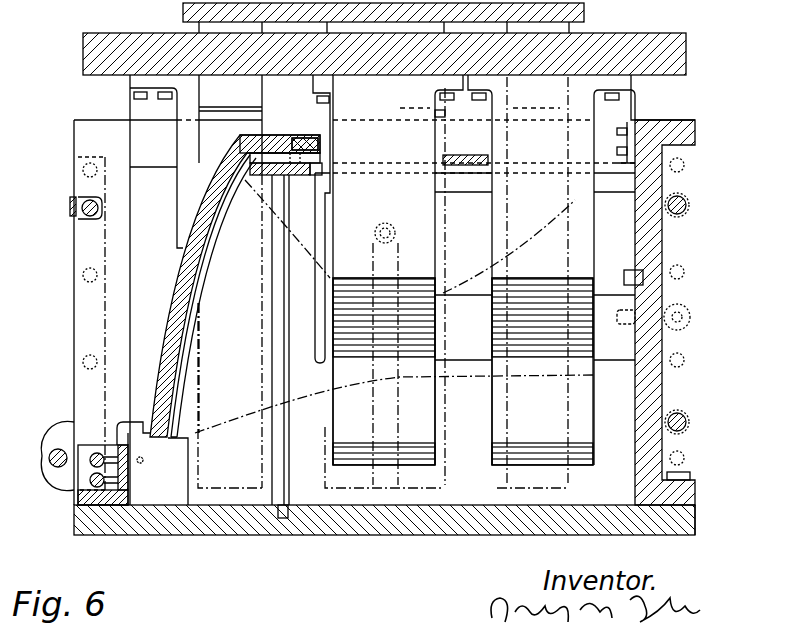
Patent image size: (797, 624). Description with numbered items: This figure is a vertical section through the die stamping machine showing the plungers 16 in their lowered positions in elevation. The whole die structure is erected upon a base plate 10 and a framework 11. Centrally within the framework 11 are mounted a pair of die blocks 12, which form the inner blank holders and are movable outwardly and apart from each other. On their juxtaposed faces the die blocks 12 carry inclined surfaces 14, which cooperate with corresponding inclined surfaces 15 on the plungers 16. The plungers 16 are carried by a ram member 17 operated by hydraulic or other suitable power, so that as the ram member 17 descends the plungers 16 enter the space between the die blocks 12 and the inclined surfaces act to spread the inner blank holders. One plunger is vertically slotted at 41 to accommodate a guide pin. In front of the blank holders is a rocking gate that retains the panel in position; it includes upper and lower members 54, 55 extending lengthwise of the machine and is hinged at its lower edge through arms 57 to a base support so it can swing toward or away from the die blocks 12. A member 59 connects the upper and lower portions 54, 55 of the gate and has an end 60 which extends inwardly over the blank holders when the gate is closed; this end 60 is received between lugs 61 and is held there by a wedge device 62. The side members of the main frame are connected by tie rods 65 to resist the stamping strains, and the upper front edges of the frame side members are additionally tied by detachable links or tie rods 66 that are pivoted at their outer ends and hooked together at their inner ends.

The base plate 10 is at (366, 535).
The framework 11 is at (662, 255).
The die block 12 is at (315, 370).
The inclined surface 14 is at (462, 310).
The inclined surface 15 is at (505, 325).
The plunger 16 is at (505, 413).
The ram member 17 is at (697, 22).
The vertical slot 41 is at (367, 423).
The upper gate member 54 is at (183, 433).
The lower gate member 55 is at (213, 296).
The arm 57 is at (125, 428).
The gate member 59 is at (176, 268).
The extending end 60 is at (312, 147).
The lug 61 is at (322, 163).
The wedge device 62 is at (312, 137).
The tie rod 65 is at (56, 470).
The detachable link or tie rod 66 is at (78, 210).